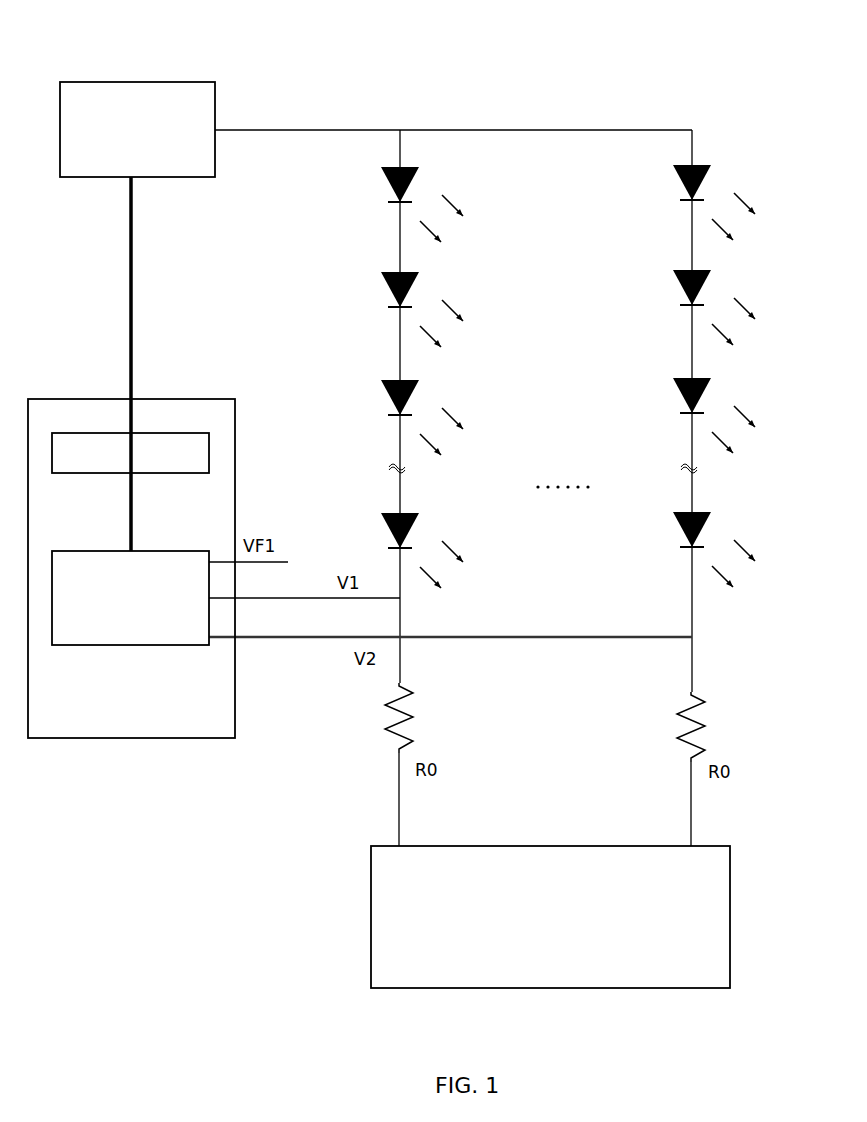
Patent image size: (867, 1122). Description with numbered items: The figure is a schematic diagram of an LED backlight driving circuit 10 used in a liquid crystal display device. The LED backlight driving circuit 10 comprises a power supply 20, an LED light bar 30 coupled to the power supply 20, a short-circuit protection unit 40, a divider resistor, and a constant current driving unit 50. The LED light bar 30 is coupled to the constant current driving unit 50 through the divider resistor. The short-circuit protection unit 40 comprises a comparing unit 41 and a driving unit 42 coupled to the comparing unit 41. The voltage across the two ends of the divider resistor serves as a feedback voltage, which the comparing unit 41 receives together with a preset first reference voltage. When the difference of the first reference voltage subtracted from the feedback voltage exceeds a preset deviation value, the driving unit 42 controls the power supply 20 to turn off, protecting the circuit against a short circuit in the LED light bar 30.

The LED backlight driving circuit 10 is at (255, 57).
The power supply 20 is at (160, 146).
The LED light bar 30 is at (690, 250).
The short-circuit protection unit 40 is at (144, 732).
The comparing unit 41 is at (150, 618).
The driving unit 42 is at (150, 470).
The constant current driving unit 50 is at (572, 935).